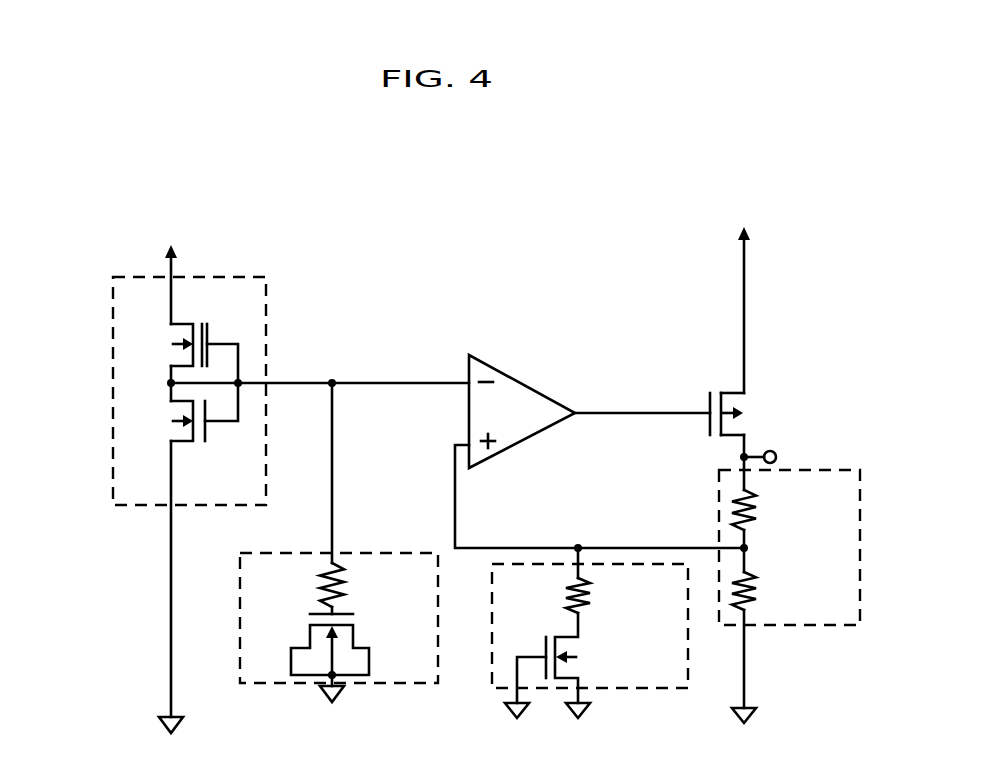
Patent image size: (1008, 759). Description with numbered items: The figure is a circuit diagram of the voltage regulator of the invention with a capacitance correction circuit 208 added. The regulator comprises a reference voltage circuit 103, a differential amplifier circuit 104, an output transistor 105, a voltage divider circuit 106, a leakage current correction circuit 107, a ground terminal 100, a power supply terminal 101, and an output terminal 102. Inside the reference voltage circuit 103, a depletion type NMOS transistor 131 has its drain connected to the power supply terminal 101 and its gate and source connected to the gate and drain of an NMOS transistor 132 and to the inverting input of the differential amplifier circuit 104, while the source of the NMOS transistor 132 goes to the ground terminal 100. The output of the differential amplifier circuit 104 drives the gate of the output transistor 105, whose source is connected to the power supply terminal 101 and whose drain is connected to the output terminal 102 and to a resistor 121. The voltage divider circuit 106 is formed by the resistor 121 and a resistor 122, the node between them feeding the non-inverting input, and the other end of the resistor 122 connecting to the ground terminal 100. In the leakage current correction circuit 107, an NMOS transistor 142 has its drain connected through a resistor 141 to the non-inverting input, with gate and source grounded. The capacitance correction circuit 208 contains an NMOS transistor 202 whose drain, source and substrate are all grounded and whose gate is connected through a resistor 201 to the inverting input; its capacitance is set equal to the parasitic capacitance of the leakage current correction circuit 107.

The ground terminal 100 is at (160, 717).
The power supply terminal 101 is at (738, 228).
The output terminal 102 is at (773, 447).
The reference voltage circuit 103 is at (193, 282).
The differential amplifier circuit 104 is at (518, 378).
The output transistor 105 is at (746, 405).
The voltage divider circuit 106 is at (795, 627).
The leakage current correction circuit 107 is at (497, 628).
The resistor 121 is at (760, 505).
The resistor 122 is at (760, 585).
The depletion type NMOS transistor 131 is at (182, 322).
The NMOS transistor 132 is at (188, 446).
The resistor 141 is at (590, 600).
The NMOS transistor 142 is at (585, 660).
The resistor 201 is at (346, 595).
The NMOS transistor 202 is at (340, 652).
The capacitance correction circuit 208 is at (240, 620).